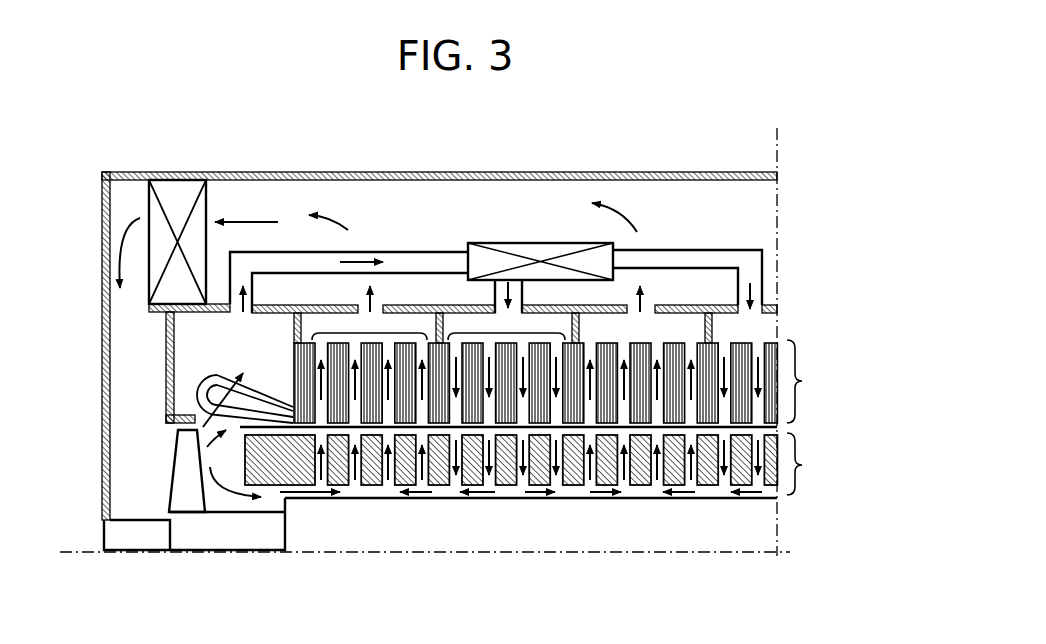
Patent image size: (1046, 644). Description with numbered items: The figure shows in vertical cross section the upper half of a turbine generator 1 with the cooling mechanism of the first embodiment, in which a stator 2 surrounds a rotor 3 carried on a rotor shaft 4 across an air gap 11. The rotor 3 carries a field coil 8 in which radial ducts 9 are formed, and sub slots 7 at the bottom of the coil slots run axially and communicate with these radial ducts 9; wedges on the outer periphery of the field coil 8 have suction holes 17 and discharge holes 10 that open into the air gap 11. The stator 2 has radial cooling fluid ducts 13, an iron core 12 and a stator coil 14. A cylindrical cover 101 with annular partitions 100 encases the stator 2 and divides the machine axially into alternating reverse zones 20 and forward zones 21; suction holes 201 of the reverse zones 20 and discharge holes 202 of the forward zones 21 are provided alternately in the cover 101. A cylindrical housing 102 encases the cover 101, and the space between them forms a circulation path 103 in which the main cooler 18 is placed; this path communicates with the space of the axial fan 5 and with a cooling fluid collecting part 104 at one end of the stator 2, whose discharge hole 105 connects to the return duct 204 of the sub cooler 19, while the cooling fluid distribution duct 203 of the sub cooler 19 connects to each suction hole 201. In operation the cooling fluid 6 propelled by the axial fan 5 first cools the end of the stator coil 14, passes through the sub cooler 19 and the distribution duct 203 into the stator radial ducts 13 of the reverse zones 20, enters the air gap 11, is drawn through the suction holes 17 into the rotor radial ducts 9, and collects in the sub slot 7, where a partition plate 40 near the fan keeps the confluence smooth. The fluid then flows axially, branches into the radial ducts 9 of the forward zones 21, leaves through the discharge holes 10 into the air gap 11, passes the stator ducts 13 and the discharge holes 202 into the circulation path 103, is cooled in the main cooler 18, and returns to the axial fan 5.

The turbine generator 1 is at (140, 172).
The main cooler 18 is at (173, 193).
The discharge holes 202 is at (360, 302).
The suction holes 201 is at (492, 300).
The cylindrical housing 102 is at (462, 172).
The cooling fluid distribution duct 203 is at (540, 262).
The circulation path 103 is at (733, 197).
The return duct 204 is at (407, 260).
The sub cooler 19 is at (497, 243).
The cylindrical cover 101 is at (683, 310).
The annular partitions 100 is at (713, 325).
The cooling fluid collecting part 104 is at (172, 317).
The discharge hole 105 is at (263, 293).
The iron core 12 is at (294, 343).
The forward zones 21 is at (383, 333).
The reverse zones 20 is at (508, 324).
The stator coil 14 is at (205, 378).
The cooling fluid ducts 13 is at (293, 380).
The stator 2 is at (557, 381).
The air gap 11 is at (767, 428).
The rotor 3 is at (532, 465).
The axial fan 5 is at (185, 470).
The cooling fluid 6 is at (228, 490).
The rotor shaft 4 is at (312, 537).
The partition plate 40 is at (367, 494).
The sub slots 7 is at (443, 490).
The field coil 8 is at (503, 488).
The radial ducts 9 is at (575, 488).
The discharge holes 10 is at (641, 488).
The suction holes 17 is at (707, 488).